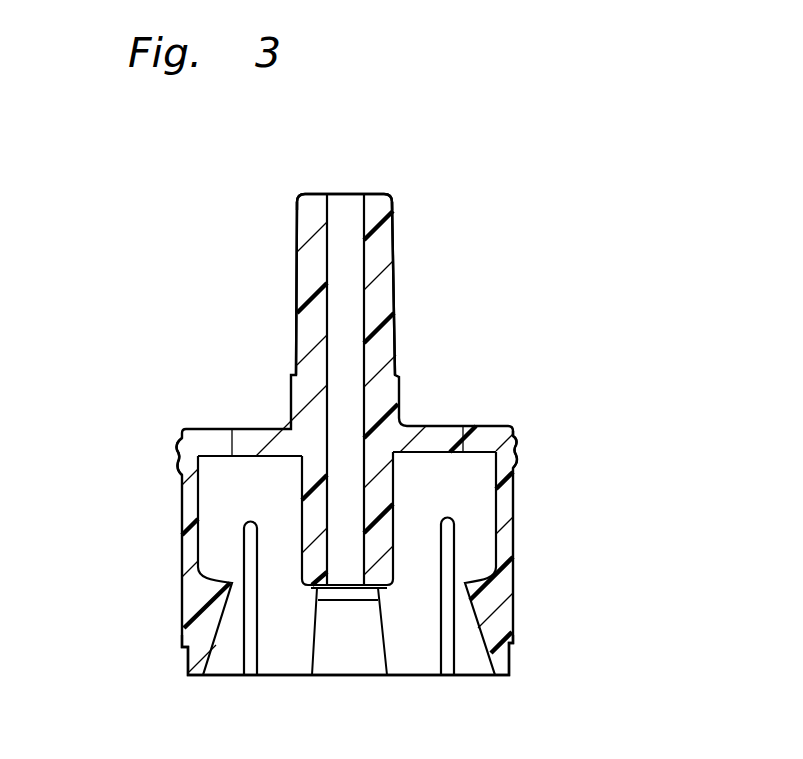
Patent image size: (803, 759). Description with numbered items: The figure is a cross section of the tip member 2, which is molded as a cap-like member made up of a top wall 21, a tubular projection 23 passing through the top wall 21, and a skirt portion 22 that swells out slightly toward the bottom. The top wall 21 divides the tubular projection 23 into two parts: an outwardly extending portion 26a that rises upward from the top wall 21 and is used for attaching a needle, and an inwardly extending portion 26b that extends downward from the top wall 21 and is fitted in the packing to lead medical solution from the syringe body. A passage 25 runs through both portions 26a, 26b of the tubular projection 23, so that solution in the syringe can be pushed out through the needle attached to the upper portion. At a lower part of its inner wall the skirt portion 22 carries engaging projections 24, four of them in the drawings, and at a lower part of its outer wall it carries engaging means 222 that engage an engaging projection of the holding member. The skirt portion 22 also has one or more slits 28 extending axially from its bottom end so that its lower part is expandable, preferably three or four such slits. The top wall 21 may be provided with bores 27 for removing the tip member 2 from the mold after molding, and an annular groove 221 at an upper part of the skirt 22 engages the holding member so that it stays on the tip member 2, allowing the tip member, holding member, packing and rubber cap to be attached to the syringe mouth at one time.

The tip member 2 is at (548, 278).
The top wall 21 is at (262, 429).
The skirt portion 22 is at (183, 533).
The tubular projection 23 is at (392, 250).
The engaging projections 24 is at (473, 578).
The passage 25 is at (372, 352).
The outwardly extending portion 26a is at (306, 224).
The inwardly extending portion 26b is at (393, 500).
The bores 27 is at (482, 426).
The slits 28 is at (240, 612).
The annular groove 221 is at (177, 459).
The engaging means 222 is at (512, 643).